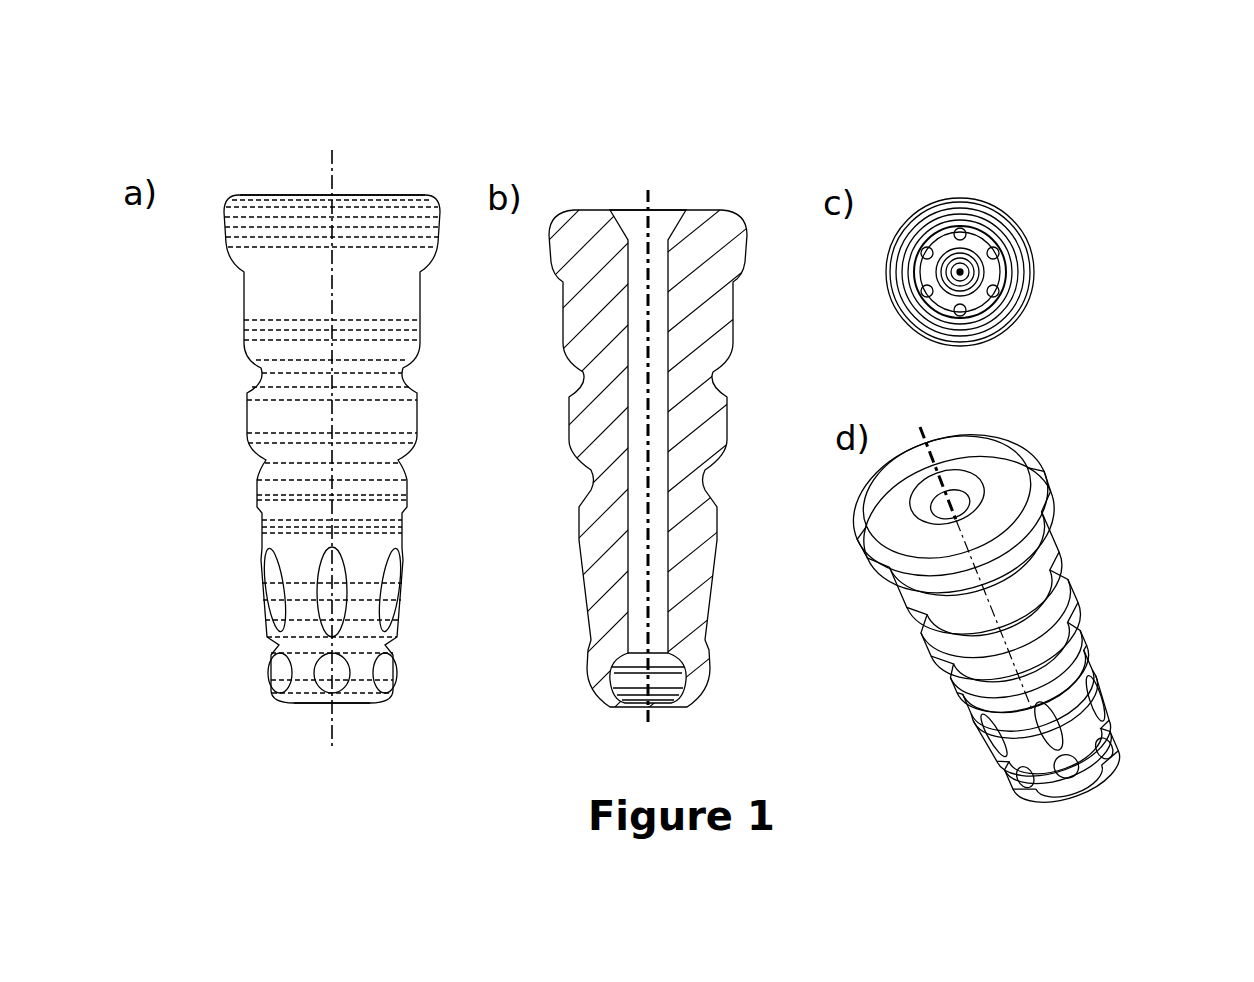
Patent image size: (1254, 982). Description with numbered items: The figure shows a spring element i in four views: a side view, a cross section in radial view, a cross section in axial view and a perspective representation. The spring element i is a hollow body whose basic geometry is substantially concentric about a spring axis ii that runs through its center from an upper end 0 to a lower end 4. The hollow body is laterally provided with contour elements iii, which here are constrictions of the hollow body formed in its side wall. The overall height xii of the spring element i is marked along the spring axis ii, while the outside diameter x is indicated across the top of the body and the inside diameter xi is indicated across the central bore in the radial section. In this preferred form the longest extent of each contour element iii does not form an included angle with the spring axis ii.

The spring element i is at (368, 417).
The spring axis ii is at (333, 147).
The contour elements iii is at (393, 583).
The outside diameter x is at (423, 267).
The inside diameter xi is at (630, 377).
The height xii is at (210, 207).
The upper end 0 is at (291, 180).
The lower end 4 is at (292, 714).